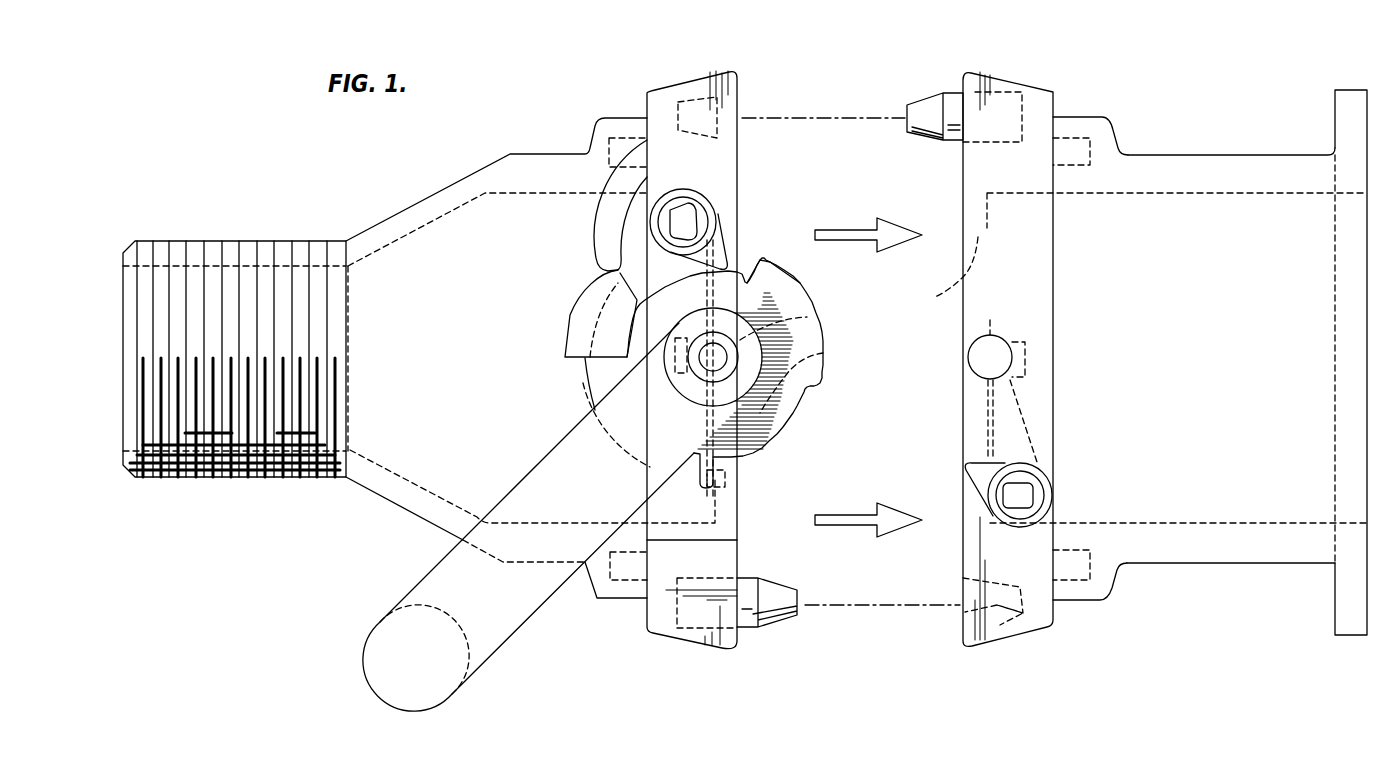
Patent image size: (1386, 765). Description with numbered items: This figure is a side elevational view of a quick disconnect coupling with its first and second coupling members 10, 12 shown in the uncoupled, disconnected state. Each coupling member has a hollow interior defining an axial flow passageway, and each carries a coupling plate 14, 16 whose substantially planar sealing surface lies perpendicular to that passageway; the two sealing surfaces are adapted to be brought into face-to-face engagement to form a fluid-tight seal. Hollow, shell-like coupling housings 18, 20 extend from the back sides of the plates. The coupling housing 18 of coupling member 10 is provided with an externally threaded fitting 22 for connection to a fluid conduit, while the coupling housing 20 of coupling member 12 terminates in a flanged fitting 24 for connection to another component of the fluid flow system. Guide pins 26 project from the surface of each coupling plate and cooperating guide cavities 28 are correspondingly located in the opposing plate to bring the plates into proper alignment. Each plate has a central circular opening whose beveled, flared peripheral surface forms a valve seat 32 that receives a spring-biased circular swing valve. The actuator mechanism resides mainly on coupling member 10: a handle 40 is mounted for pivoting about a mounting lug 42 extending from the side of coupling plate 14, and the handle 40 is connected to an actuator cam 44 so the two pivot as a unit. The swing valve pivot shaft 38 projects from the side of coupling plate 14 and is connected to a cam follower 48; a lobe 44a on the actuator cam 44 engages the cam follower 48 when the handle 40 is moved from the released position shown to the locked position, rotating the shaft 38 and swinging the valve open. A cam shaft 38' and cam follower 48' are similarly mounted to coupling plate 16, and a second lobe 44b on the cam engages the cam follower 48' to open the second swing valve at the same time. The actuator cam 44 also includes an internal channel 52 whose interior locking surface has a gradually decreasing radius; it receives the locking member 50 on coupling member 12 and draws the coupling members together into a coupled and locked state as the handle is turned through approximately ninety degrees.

The first coupling member 10 is at (538, 148).
The second coupling member 12 is at (1083, 117).
The coupling plate 14 is at (688, 80).
The coupling plate 16 is at (1005, 336).
The coupling housing 18 is at (400, 216).
The coupling housing 20 is at (1146, 176).
The externally threaded fitting 22 is at (209, 249).
The flange 24 is at (1357, 112).
The guide pins 26 is at (922, 112).
The guide cavities 28 is at (738, 103).
The valve seat 32 is at (725, 467).
The swing valve pivot shaft 38 is at (720, 222).
The cam shaft 38' is at (1005, 490).
The handle 40 is at (483, 625).
The mounting lug 42 is at (708, 357).
The actuator cam 44 is at (777, 403).
The lobe 44a is at (802, 291).
The lobe 44b is at (583, 388).
The cam follower 48 is at (725, 241).
The cam follower 48' is at (954, 487).
The locking member 50 is at (990, 360).
The internal channel 52 is at (823, 353).